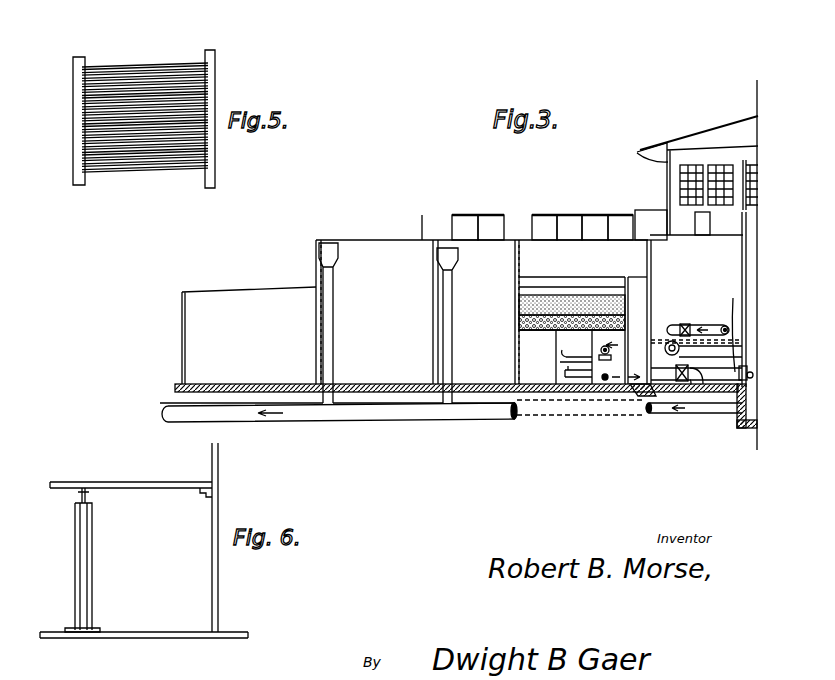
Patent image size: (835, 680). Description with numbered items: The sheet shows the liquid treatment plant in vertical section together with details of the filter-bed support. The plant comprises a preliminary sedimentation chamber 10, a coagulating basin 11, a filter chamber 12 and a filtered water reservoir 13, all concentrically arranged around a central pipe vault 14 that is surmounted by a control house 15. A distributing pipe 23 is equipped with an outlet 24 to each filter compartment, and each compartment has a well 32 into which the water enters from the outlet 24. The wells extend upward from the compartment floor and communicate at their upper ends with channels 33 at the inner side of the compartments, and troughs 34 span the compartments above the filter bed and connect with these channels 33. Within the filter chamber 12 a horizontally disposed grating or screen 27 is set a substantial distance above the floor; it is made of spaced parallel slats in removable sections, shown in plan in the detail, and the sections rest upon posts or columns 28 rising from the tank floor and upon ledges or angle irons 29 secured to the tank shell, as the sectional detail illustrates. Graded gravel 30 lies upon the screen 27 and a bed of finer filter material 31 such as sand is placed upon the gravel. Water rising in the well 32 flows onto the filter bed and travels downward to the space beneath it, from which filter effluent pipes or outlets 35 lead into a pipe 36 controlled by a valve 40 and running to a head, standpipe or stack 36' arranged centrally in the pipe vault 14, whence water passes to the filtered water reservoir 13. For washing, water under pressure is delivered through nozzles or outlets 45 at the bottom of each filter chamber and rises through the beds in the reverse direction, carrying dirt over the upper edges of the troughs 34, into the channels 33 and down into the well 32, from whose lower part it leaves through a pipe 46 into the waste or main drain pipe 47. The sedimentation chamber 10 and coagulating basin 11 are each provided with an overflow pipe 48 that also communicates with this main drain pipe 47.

In FIG. 3, the preliminary sedimentation chamber 10 is at (383, 247).
In FIG. 3, the coagulating basin 11 is at (504, 250).
In FIG. 3, the filter chamber 12 is at (592, 245).
In FIG. 3, the filtered water reservoir 13 is at (218, 300).
In FIG. 3, the central pipe vault 14 is at (693, 320).
In FIG. 3, the control house 15 is at (705, 135).
In FIG. 3, the distributing element 23 is at (693, 331).
In FIG. 3, the outlet 24 is at (662, 325).
In FIG. 5, the grating or screen 27 is at (158, 65).
In FIG. 6, the grating or screen 27 is at (144, 482).
In FIG. 3, the grating or screen 27 is at (520, 333).
In FIG. 6, the posts or columns 28 is at (93, 538).
In FIG. 3, the posts or columns 28 is at (556, 370).
In FIG. 5, the ledges or angle irons 29 is at (213, 52).
In FIG. 6, the ledges or angle irons 29 is at (196, 496).
In FIG. 3, the graded gravel 30 is at (515, 307).
In FIG. 3, the finer filter material 31 is at (568, 302).
In FIG. 3, the well 32 is at (640, 305).
In FIG. 3, the channels 33 is at (637, 278).
In FIG. 3, the troughs 34 is at (545, 282).
In FIG. 3, the filter effluent pipes or outlets 35 is at (597, 372).
In FIG. 3, the pipe 36 is at (674, 406).
In FIG. 3, the head, standpipe or stack 36' is at (715, 254).
In FIG. 3, the valve 40 is at (723, 324).
In FIG. 3, the nozzles or outlets 45 is at (593, 343).
In FIG. 3, the pipe 46 is at (698, 388).
In FIG. 3, the waste or main drain pipe 47 is at (455, 410).
In FIG. 3, the overflow pipe 48 is at (336, 278).